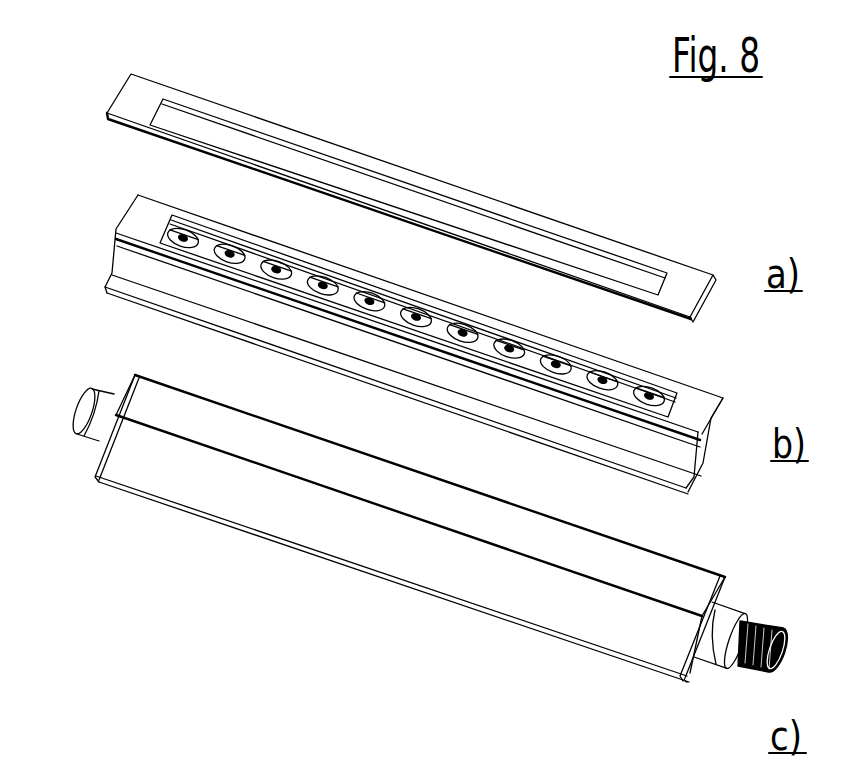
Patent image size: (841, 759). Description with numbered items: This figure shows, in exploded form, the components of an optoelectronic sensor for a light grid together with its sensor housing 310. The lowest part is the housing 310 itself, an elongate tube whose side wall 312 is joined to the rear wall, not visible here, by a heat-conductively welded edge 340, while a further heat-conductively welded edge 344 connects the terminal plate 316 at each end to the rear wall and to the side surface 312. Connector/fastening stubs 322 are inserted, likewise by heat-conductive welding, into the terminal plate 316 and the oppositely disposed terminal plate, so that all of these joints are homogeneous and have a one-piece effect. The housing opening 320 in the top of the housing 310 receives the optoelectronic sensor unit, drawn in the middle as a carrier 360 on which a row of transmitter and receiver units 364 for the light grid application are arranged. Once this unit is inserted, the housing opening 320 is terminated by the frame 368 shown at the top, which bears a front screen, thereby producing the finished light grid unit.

The sensor housing 310 is at (418, 542).
The side wall 312 is at (380, 560).
The terminal plate 316 is at (727, 582).
The housing opening 320 is at (338, 470).
The connector/fastening stub 322 is at (105, 392).
The heat-conductively welded edge 340 is at (534, 638).
The heat-conductively welded edge 344 is at (96, 457).
The carrier of the optoelectronic sensor unit 360 is at (374, 344).
The transmitter and receiver units 364 is at (470, 331).
The frame 368 is at (683, 280).